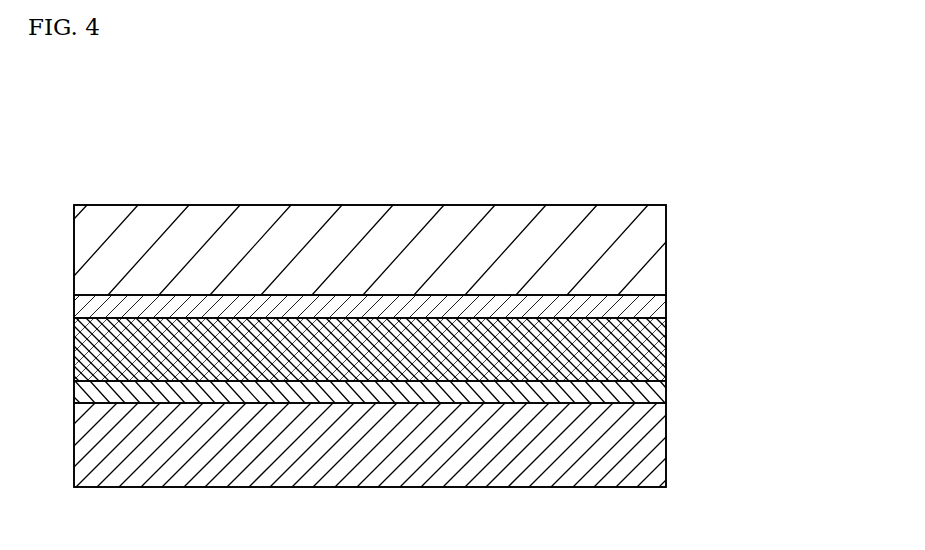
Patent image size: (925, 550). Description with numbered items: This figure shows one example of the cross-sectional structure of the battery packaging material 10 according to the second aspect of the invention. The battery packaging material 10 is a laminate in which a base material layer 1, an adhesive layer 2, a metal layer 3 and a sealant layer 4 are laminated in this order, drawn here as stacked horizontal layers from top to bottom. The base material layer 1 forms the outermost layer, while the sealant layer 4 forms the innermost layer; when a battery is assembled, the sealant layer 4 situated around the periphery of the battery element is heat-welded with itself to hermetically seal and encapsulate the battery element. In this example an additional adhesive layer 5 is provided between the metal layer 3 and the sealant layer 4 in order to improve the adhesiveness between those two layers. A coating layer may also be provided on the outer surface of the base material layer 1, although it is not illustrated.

The battery packaging material 10 is at (393, 175).
The base material layer 1 is at (666, 248).
The adhesive layer 2 is at (666, 308).
The metal layer 3 is at (666, 359).
The adhesive layer 5 is at (666, 397).
The sealant layer 4 is at (666, 442).